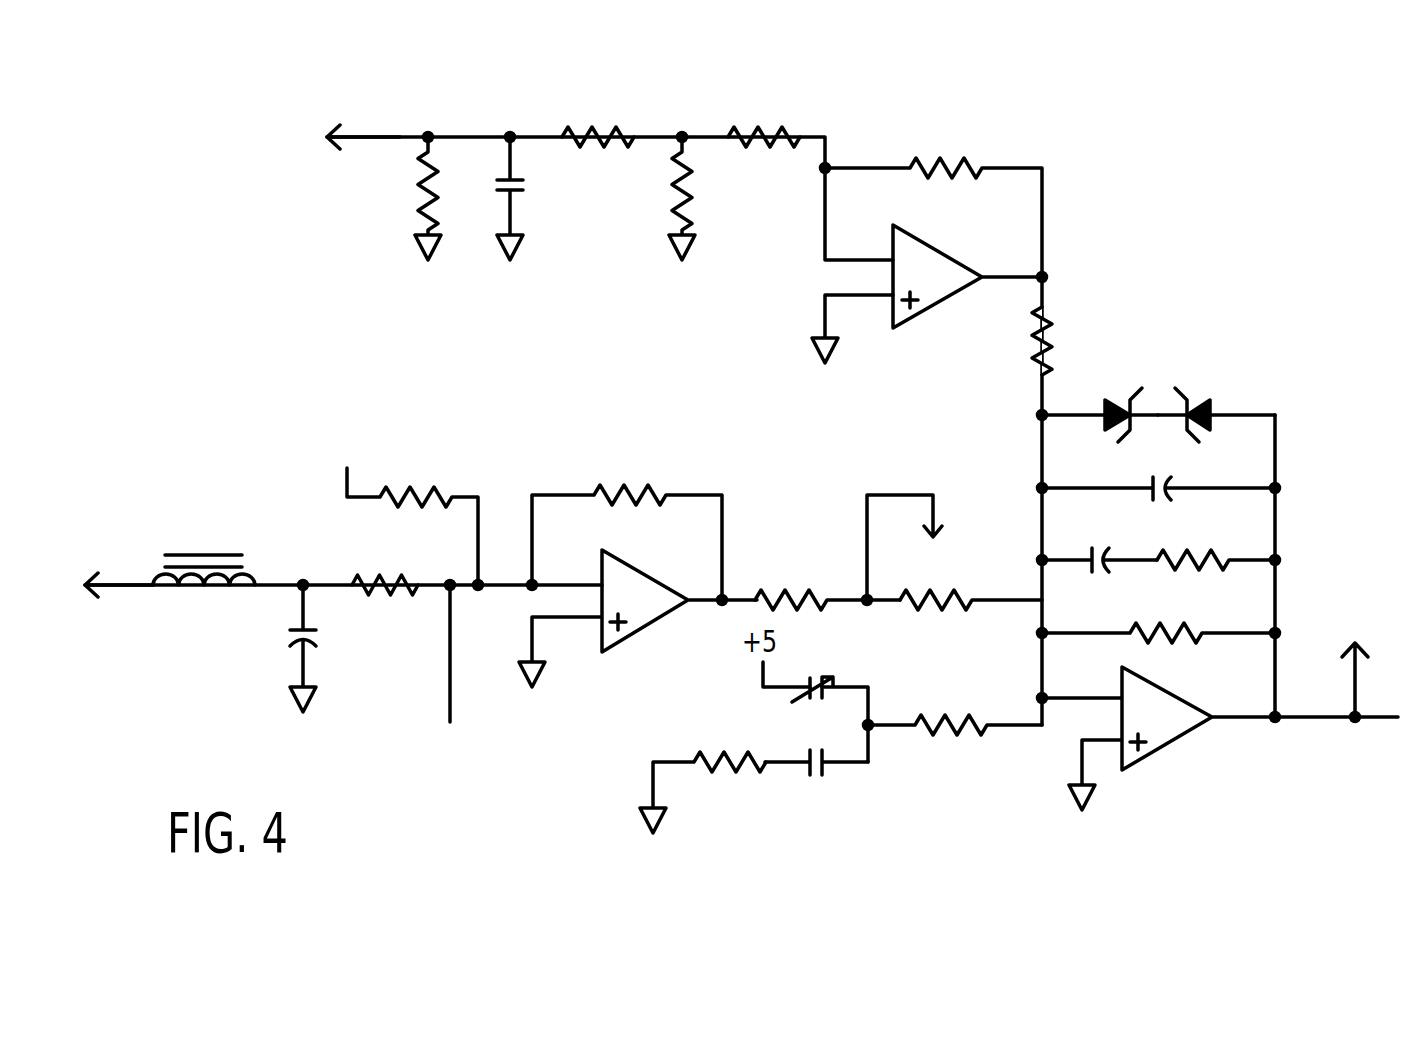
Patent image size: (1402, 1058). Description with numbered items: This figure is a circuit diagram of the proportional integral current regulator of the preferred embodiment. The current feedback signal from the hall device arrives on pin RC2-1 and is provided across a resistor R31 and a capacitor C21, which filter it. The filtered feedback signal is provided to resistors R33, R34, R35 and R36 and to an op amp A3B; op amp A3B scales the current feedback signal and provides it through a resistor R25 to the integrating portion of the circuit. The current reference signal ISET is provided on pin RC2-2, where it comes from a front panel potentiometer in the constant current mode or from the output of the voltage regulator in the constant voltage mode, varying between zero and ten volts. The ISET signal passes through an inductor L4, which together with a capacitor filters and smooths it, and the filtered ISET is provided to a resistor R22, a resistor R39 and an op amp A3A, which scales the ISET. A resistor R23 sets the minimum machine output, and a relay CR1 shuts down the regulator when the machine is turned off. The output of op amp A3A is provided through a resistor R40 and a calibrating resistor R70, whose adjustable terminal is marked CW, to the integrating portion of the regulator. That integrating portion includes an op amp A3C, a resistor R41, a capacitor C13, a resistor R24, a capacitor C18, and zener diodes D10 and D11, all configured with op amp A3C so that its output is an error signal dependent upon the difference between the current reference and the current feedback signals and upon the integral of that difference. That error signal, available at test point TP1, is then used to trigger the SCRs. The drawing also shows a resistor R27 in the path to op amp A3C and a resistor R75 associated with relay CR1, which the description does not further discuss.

The current feedback input pin RC2-1 is at (335, 163).
The current reference input pin RC2-2 is at (117, 614).
The resistor R31 is at (403, 197).
The capacitor C21 is at (487, 197).
The resistor R33 is at (598, 116).
The resistor R34 is at (712, 197).
The resistor R35 is at (764, 116).
The resistor R36 is at (933, 197).
The op amp A3B is at (925, 253).
The resistor R25 is at (1014, 341).
The zener diode D10 is at (1100, 396).
The zener diode D11 is at (1216, 396).
The capacitor C18 is at (1158, 469).
The capacitor C13 is at (1099, 542).
The resistor R24 is at (1216, 541).
The resistor R41 is at (1158, 615).
The op amp A3C is at (1150, 693).
The test point TP1 is at (1333, 682).
The inductor L4 is at (204, 550).
The resistor R22 is at (385, 566).
The resistor R23 is at (412, 516).
The resistor R39 is at (629, 525).
The op amp A3A is at (632, 577).
The resistor R40 is at (827, 580).
The calibrating resistor R70 is at (971, 580).
The clockwise wiper terminal CW is at (930, 547).
The relay CR1 is at (816, 726).
The resistor R27 is at (955, 705).
The resistor R75 is at (703, 773).